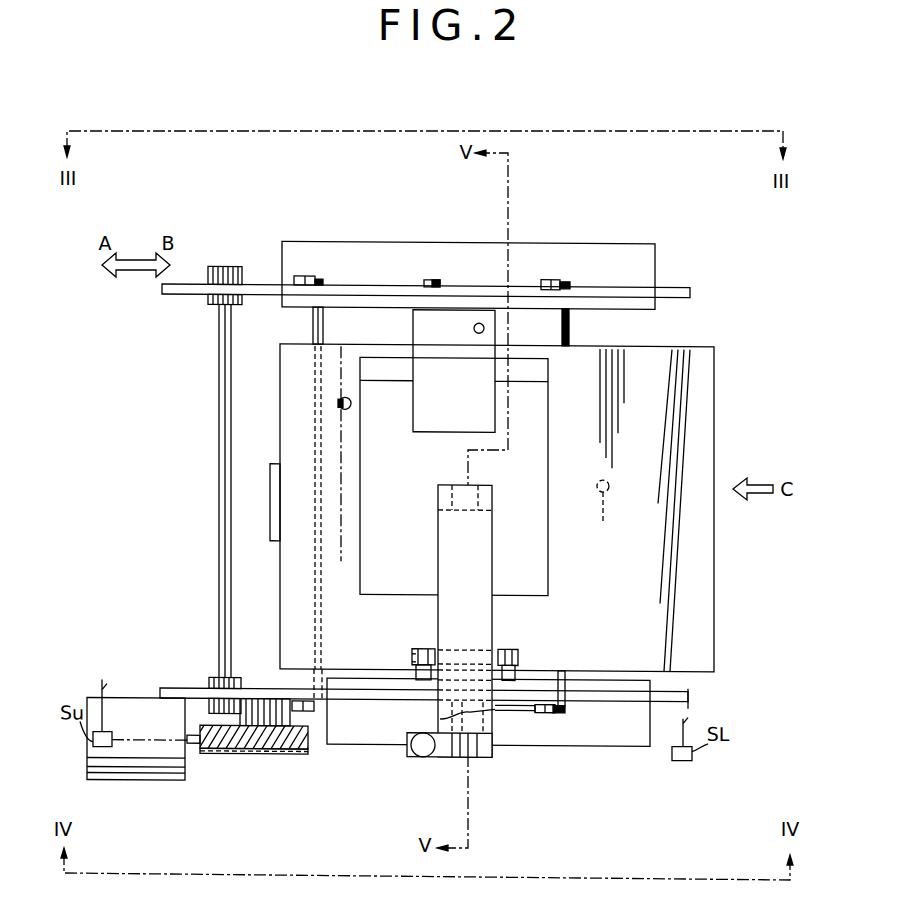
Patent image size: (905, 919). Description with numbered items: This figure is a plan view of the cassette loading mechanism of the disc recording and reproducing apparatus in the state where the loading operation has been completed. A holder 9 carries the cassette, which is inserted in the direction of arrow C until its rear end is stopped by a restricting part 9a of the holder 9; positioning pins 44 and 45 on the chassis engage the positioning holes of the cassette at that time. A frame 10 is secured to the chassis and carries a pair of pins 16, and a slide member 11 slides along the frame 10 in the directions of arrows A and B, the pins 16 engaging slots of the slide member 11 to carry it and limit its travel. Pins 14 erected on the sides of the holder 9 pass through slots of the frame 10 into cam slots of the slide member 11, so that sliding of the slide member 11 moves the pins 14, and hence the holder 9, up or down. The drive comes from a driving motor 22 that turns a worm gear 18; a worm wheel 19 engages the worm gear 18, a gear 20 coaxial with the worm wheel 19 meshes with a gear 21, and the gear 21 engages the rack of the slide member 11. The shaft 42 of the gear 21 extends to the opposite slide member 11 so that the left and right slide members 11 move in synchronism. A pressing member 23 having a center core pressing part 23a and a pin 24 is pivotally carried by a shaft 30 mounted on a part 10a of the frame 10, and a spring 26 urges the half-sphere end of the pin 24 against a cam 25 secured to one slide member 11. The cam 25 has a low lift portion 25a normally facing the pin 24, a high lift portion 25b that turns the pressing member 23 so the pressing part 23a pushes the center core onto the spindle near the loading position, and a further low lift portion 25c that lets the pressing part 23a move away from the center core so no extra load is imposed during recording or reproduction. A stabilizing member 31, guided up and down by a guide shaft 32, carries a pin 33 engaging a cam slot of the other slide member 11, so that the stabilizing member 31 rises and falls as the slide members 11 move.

The holder 9 is at (714, 614).
The restricting part 9a is at (273, 483).
The frame 10 is at (490, 246).
The part of frame 10a is at (423, 647).
The slide member 11 is at (638, 292).
The pins 14 is at (313, 328).
The pins 16 is at (305, 275).
The worm gear 18 is at (200, 754).
The worm wheel 19 is at (303, 753).
The gear 20 is at (258, 740).
The gear 21 is at (226, 266).
The driving motor 22 is at (150, 772).
The pressing member 23 is at (493, 541).
The center core pressing part 23a is at (470, 492).
The pin 24 is at (458, 745).
The cam 25 is at (500, 710).
The low lift portion 25a is at (536, 710).
The high lift portion 25b is at (482, 745).
The low lift portion 25c is at (440, 716).
The spring 26 is at (416, 756).
The shaft 30 is at (412, 660).
The stabilizing member 31 is at (428, 432).
The guide shaft 32 is at (479, 332).
The pin 33 is at (432, 277).
The shaft 42 is at (219, 494).
The positioning pin 44 is at (603, 512).
The positioning pin 45 is at (343, 408).